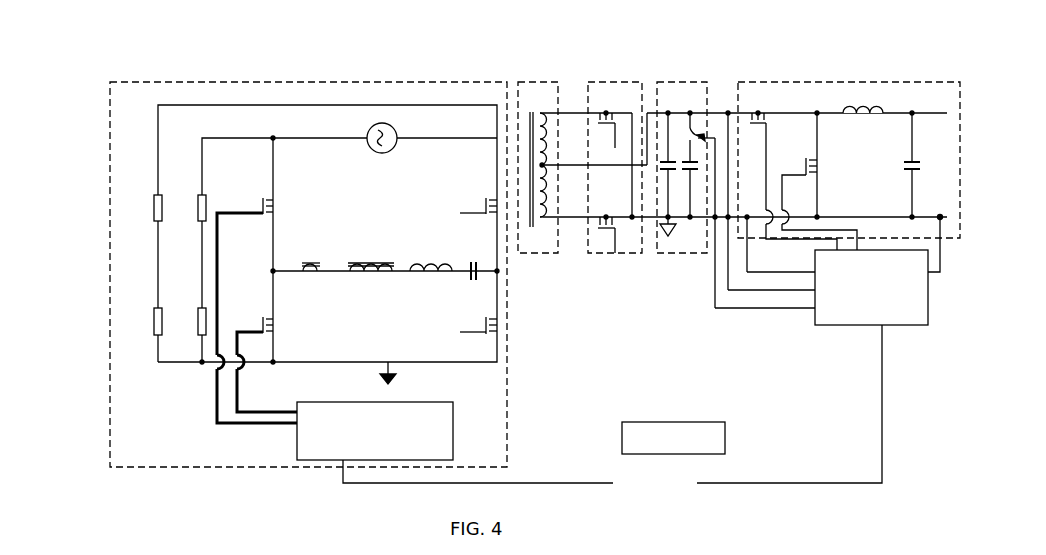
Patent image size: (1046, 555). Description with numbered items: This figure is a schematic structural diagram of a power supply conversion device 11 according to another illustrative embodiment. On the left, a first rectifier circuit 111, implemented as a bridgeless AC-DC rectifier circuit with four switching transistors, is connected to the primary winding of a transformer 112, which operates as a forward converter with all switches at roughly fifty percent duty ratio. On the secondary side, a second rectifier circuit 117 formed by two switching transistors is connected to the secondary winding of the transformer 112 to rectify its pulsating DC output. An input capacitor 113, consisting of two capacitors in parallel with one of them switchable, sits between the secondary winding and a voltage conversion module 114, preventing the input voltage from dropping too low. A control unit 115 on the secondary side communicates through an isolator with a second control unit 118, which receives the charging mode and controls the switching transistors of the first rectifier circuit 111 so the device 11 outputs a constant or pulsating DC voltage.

The power supply conversion device 11 is at (75, 73).
The first rectifier circuit 111 is at (308, 251).
The transformer 112 is at (558, 144).
The input capacitor 113 is at (745, 172).
The voltage conversion module 114 is at (843, 163).
The control unit 115 is at (827, 271).
The second rectifier circuit 117 is at (610, 144).
The second control unit 118 is at (375, 431).